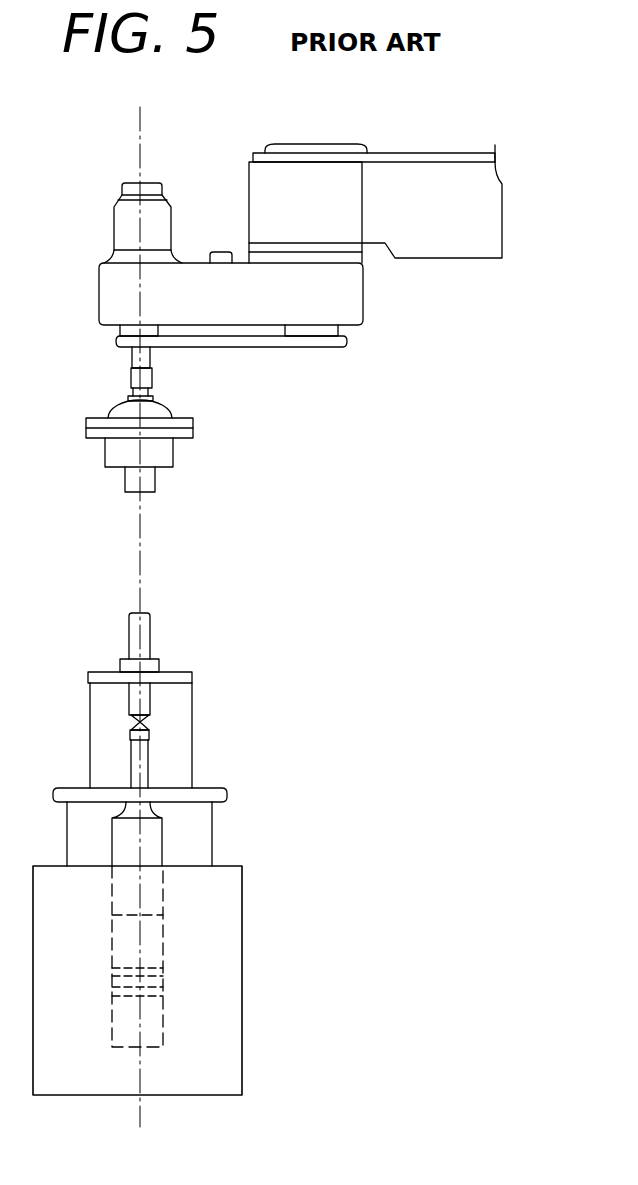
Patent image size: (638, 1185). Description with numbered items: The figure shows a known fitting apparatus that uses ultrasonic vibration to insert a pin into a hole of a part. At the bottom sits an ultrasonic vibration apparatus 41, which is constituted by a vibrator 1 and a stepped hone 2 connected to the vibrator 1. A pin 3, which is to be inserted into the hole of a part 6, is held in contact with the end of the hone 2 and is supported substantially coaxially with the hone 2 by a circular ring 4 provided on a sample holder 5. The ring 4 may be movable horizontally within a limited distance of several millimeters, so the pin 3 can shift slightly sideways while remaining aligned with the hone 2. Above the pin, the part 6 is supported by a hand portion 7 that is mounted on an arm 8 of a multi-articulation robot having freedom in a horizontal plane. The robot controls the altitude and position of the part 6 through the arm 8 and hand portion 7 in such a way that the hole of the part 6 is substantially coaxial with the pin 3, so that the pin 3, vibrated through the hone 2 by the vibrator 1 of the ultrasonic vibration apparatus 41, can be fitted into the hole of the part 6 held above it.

The vibrator 1 is at (163, 938).
The stepped hone 2 is at (162, 840).
The pin 3 is at (150, 630).
The circular ring 4 is at (159, 666).
The sample holder 5 is at (192, 718).
The part 6 is at (125, 479).
The hand portion 7 is at (86, 430).
The arm 8 is at (99, 295).
The ultrasonic vibration apparatus 41 is at (163, 892).